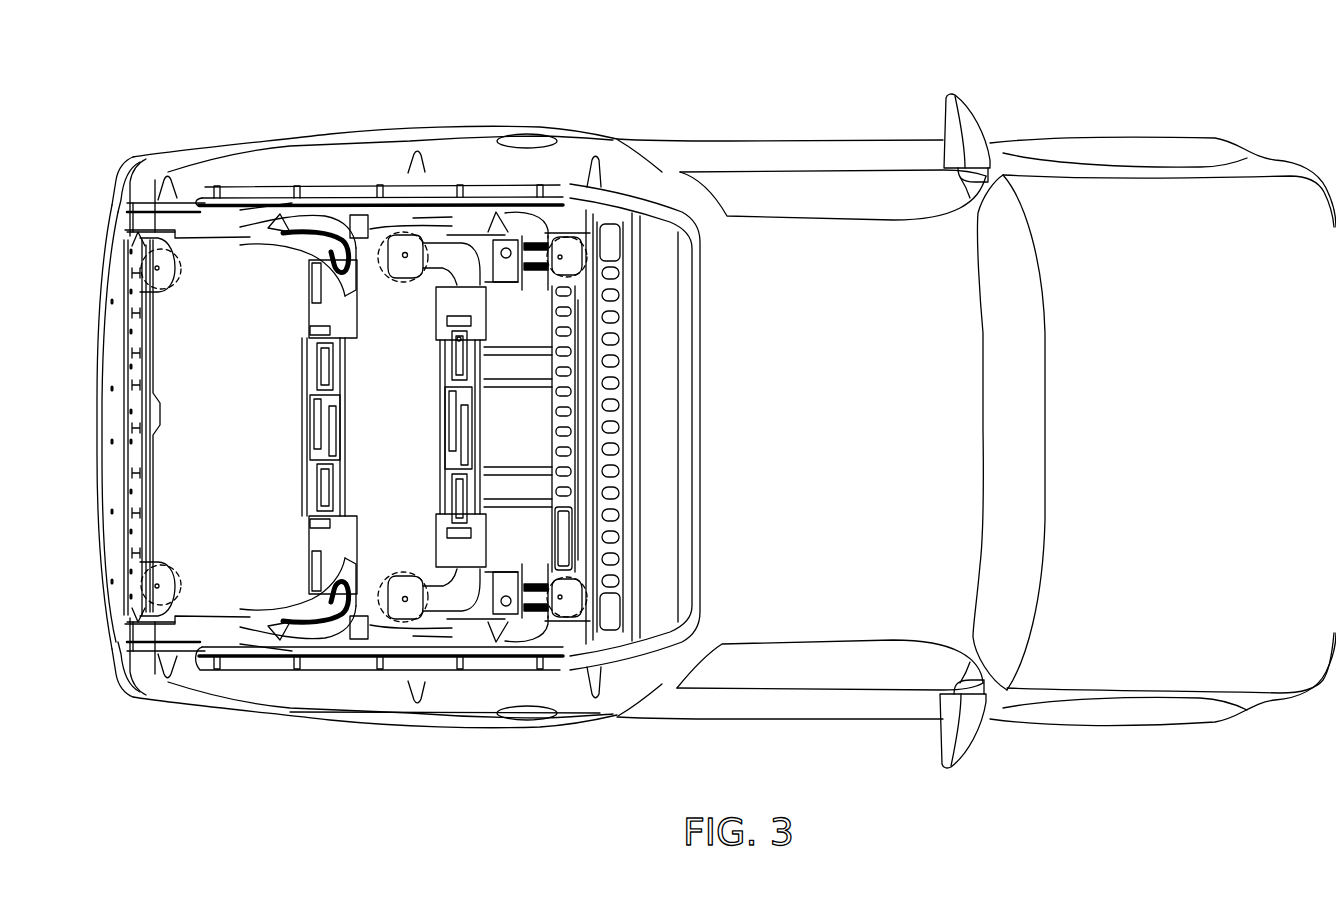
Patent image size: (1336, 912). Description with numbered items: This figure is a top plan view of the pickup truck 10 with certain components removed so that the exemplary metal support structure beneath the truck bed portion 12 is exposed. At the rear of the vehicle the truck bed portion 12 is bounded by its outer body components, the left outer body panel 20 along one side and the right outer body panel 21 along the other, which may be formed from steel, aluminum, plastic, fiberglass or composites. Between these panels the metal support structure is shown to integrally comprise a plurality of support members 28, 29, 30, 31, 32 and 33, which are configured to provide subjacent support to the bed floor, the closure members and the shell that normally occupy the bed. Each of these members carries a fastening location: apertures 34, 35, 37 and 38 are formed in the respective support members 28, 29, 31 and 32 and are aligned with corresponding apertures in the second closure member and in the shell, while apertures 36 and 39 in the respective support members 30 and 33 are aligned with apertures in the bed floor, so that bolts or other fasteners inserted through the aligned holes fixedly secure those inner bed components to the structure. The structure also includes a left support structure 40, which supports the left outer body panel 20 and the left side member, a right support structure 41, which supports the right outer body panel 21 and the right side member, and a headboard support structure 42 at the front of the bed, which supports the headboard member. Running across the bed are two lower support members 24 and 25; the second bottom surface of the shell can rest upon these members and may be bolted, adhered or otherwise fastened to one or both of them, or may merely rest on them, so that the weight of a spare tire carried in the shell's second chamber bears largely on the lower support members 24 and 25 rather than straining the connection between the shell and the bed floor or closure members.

The pickup truck 10 is at (1042, 100).
The truck bed portion 12 is at (533, 95).
The left outer body panel 20 is at (337, 163).
The right outer body panel 21 is at (335, 697).
The lower support member 24 is at (302, 431).
The lower support member 25 is at (440, 431).
The support member 28 is at (570, 230).
The support member 29 is at (406, 222).
The support member 30 is at (177, 247).
The support member 31 is at (570, 645).
The support member 32 is at (404, 630).
The support member 33 is at (133, 632).
The aperture 34 is at (556, 260).
The aperture 35 is at (405, 262).
The aperture 36 is at (166, 292).
The aperture 37 is at (556, 598).
The aperture 38 is at (405, 594).
The aperture 39 is at (166, 572).
The left support structure 40 is at (287, 222).
The right support structure 41 is at (284, 637).
The headboard support structure 42 is at (618, 432).